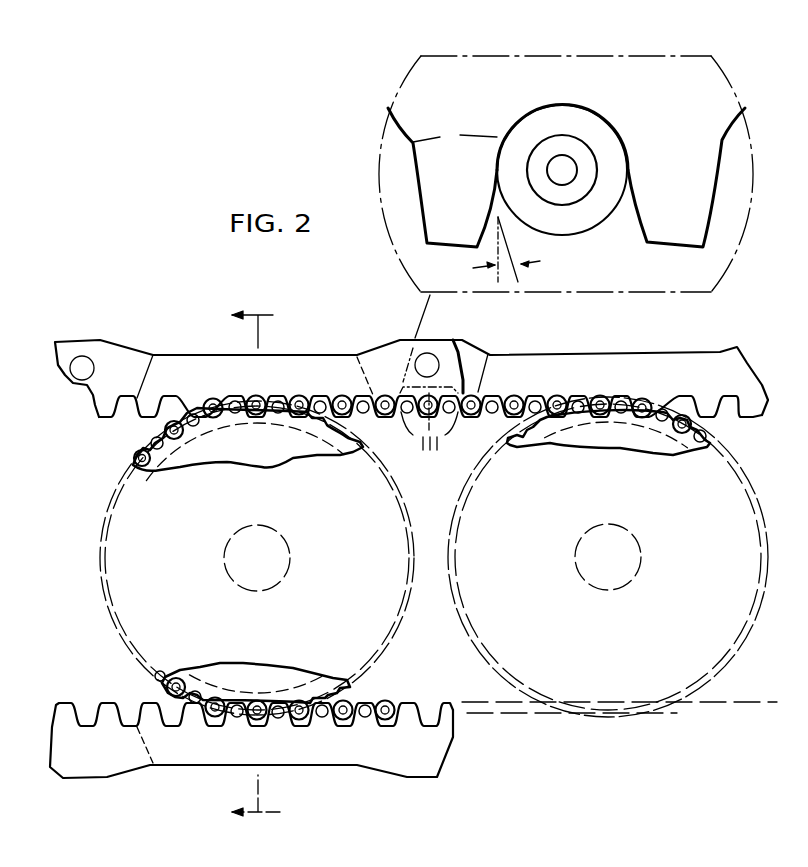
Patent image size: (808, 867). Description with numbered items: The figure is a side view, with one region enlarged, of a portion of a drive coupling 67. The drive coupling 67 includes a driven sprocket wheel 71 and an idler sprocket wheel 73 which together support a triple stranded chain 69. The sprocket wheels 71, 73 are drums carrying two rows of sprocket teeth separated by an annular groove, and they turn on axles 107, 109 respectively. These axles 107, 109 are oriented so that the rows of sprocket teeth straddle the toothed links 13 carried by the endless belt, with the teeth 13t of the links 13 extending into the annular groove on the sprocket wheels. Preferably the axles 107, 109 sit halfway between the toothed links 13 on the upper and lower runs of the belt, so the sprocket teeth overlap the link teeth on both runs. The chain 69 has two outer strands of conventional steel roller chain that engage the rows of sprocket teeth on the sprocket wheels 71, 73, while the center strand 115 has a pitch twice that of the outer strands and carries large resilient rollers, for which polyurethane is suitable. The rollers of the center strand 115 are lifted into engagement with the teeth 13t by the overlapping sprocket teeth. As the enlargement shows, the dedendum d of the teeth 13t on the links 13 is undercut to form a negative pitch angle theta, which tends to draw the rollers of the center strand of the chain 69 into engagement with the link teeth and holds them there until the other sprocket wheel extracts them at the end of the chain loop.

The toothed links 13 is at (131, 348).
The teeth 13t is at (460, 247).
The drive coupling 67 is at (440, 663).
The triple stranded chain 69 is at (523, 705).
The driven sprocket wheel 71 is at (102, 523).
The idler sprocket wheel 73 is at (747, 540).
The axle 107 is at (285, 553).
The axle 109 is at (640, 560).
The center strand 115 is at (377, 413).